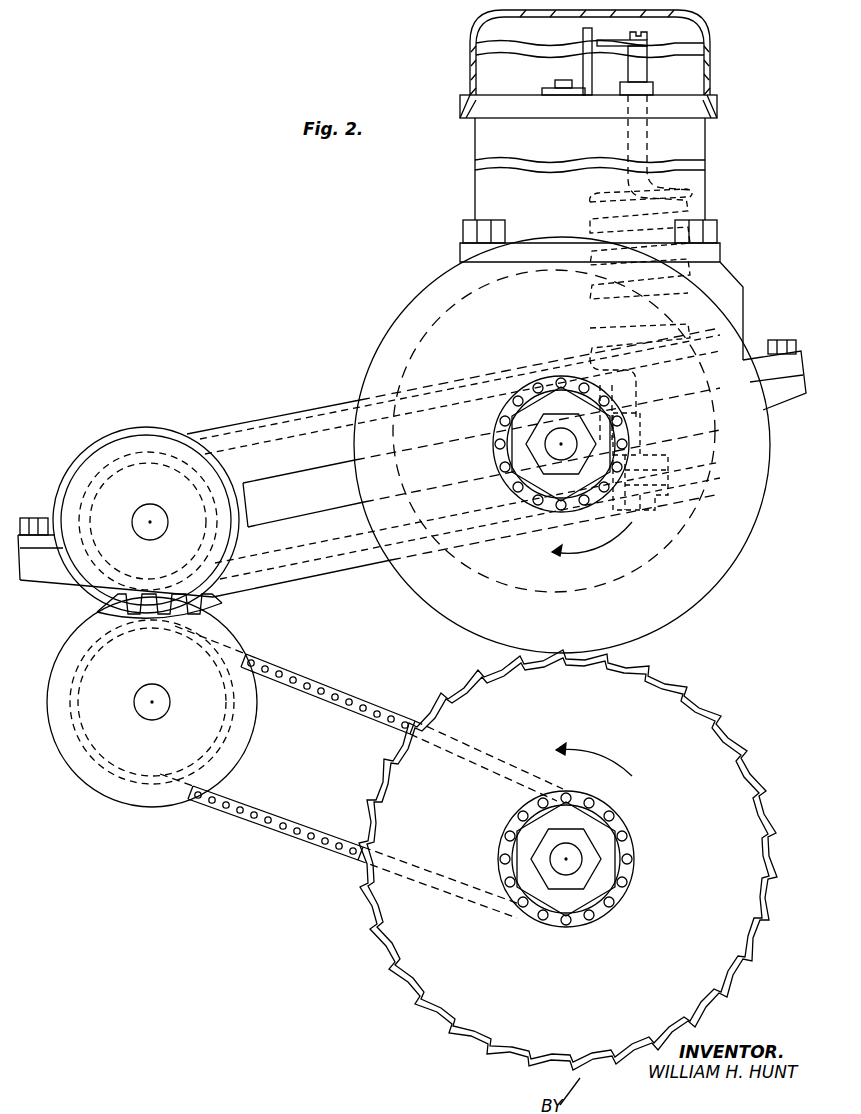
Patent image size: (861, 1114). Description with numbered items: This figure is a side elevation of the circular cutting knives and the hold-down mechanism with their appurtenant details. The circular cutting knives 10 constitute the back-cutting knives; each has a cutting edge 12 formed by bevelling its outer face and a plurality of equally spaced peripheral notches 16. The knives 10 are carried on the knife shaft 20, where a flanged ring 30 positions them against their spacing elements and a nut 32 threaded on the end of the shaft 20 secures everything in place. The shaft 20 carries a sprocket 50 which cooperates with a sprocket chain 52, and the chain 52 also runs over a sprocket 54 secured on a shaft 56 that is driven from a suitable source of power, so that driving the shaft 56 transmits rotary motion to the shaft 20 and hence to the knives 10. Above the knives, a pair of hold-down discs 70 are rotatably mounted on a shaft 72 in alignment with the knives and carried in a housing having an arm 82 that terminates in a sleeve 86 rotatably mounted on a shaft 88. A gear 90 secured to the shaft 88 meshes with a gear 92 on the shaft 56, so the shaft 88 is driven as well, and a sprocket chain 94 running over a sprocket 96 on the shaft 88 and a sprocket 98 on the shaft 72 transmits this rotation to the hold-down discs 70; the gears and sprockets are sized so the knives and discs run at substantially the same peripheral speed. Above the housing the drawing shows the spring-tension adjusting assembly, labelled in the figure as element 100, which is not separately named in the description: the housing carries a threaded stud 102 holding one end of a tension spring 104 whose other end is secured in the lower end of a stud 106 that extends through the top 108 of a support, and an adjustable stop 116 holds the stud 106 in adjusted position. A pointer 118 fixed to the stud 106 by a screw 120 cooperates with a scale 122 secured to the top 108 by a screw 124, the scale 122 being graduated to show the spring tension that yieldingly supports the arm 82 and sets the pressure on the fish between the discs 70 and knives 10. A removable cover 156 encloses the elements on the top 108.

The circular cutting knives 10 is at (748, 802).
The cutting edge 12 is at (744, 942).
The peripheral notches 16 is at (731, 737).
The knife shaft 20 is at (563, 872).
The flanged ring 30 is at (606, 848).
The nut 32 is at (589, 866).
The sprocket 50 is at (498, 842).
The sprocket chain 52 is at (295, 840).
The sprocket 54 is at (243, 753).
The shaft 56 is at (153, 714).
The hold-down discs 70 is at (762, 488).
The shaft 72 is at (559, 437).
The arm 82 is at (276, 411).
The sleeve 86 is at (155, 420).
The shaft 88 is at (133, 522).
The gear 90 is at (212, 600).
The gear 92 is at (112, 598).
The sprocket chain 94 is at (341, 557).
The sprocket 96 is at (236, 479).
The sprocket 98 is at (510, 482).
The solenoid housing 100 is at (706, 170).
The stud 102 is at (668, 487).
The tension spring 104 is at (640, 352).
The stud 106 is at (644, 143).
The top 108 is at (706, 92).
The adjustable stop 116 is at (653, 87).
The pointer 118 is at (620, 40).
The screw 120 is at (648, 36).
The scale 122 is at (583, 34).
The screw 124 is at (563, 77).
The cover 156 is at (706, 55).